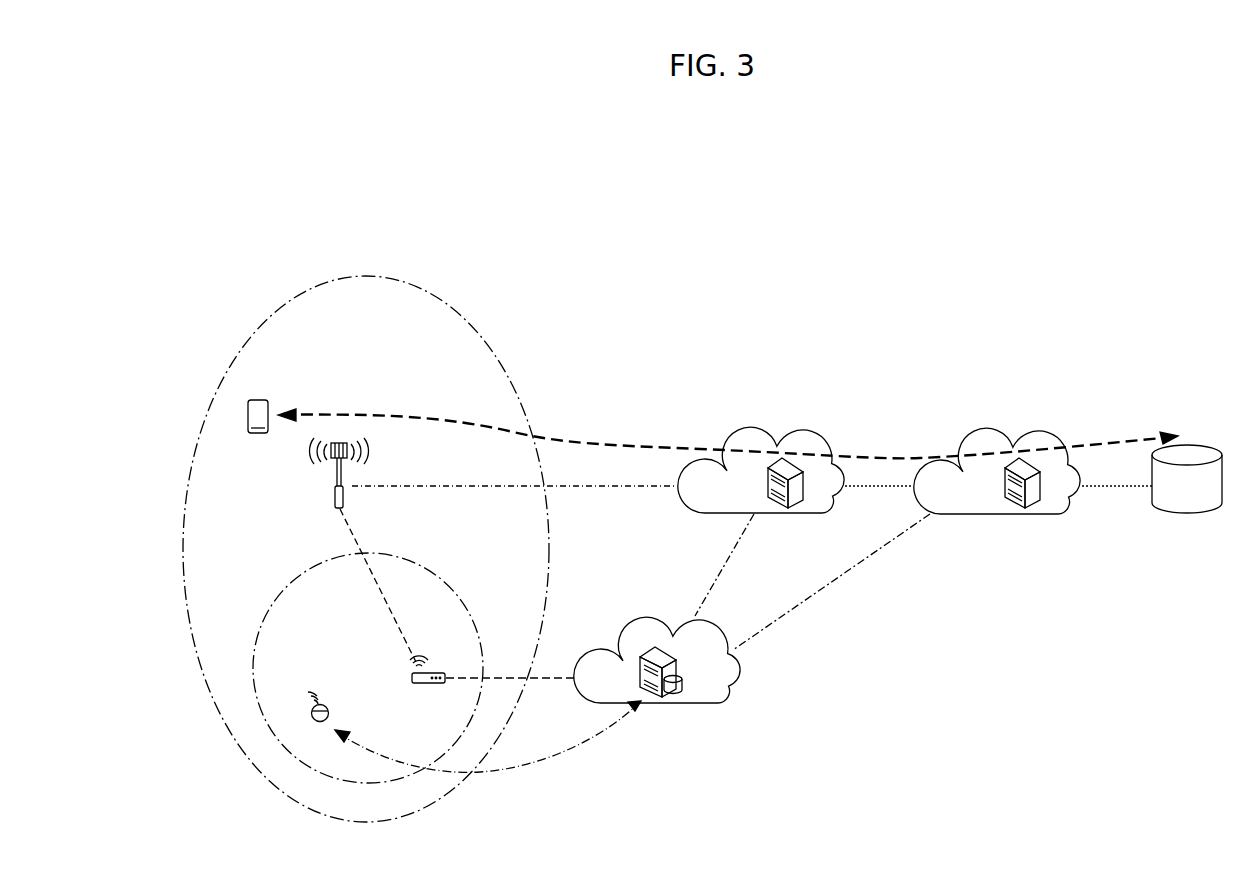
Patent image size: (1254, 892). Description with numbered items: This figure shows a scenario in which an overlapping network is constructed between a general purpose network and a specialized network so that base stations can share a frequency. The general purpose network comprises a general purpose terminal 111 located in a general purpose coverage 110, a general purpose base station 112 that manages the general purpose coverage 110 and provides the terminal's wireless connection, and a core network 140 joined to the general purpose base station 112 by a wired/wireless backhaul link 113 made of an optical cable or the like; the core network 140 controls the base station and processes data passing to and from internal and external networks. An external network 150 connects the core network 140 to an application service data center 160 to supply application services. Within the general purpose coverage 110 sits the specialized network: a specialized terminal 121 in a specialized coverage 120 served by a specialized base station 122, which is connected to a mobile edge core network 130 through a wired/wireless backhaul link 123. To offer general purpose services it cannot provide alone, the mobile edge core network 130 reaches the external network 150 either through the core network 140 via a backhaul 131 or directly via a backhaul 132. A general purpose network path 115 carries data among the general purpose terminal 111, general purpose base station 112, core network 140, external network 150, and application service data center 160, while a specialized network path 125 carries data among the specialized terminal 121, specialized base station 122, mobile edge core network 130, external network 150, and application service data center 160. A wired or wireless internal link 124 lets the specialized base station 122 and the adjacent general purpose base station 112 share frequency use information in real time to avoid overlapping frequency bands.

The general purpose coverage 110 is at (422, 288).
The general purpose terminal 111 is at (256, 434).
The general purpose base station 112 is at (335, 492).
The wired/wireless backhaul link 113 is at (620, 487).
The general purpose network path 115 is at (632, 428).
The specialized coverage 120 is at (435, 574).
The specialized terminal 121 is at (312, 695).
The specialized base station 122 is at (432, 672).
The wired/wireless backhaul link 123 is at (549, 679).
The wired or wireless internal link 124 is at (383, 596).
The specialized network path 125 is at (521, 772).
The mobile edge core network 130 is at (655, 706).
The backhaul 131 is at (721, 575).
The backhaul 132 is at (842, 574).
The core network 140 is at (800, 515).
The external network 150 is at (1037, 515).
The application service data center 160 is at (1187, 514).